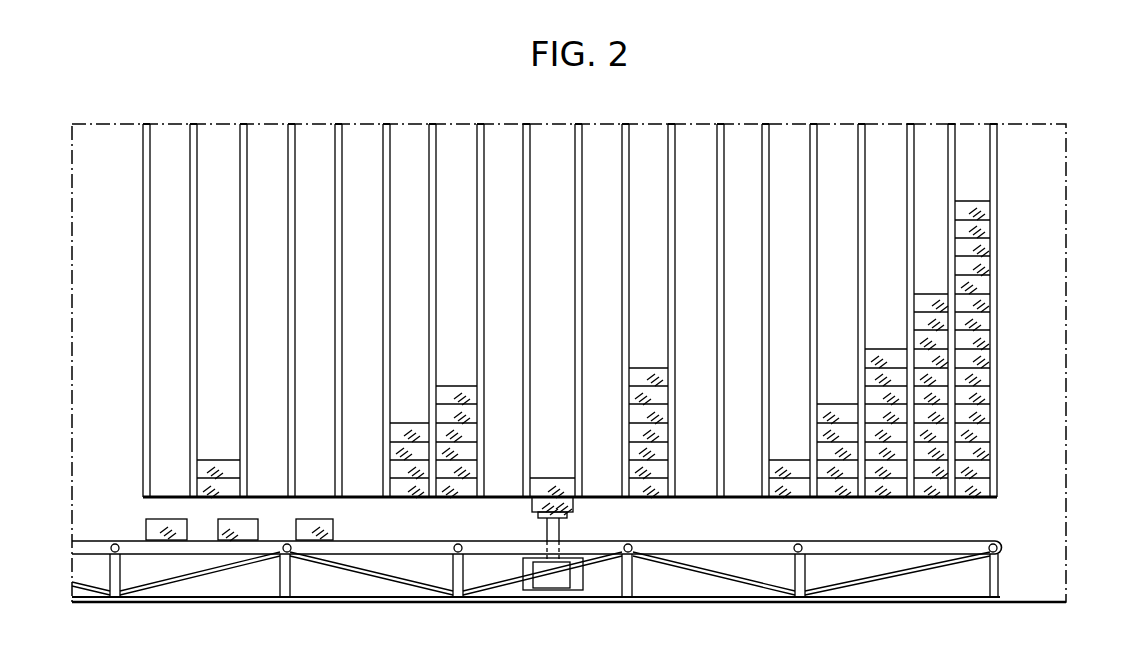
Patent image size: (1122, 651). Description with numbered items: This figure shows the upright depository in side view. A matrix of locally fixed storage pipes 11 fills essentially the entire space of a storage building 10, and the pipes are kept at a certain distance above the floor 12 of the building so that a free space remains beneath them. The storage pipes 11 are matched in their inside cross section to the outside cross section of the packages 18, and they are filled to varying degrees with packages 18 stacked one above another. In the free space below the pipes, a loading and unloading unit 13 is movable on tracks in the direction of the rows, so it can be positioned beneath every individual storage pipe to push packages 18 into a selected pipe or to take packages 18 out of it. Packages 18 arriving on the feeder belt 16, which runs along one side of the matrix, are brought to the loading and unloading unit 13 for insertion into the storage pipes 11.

The storage building 10 is at (1068, 268).
The storage pipes 11 is at (317, 148).
The floor 12 is at (695, 601).
The loading and unloading unit 13 is at (560, 584).
The feeder belt 16 is at (893, 543).
The packages 18 is at (660, 424).